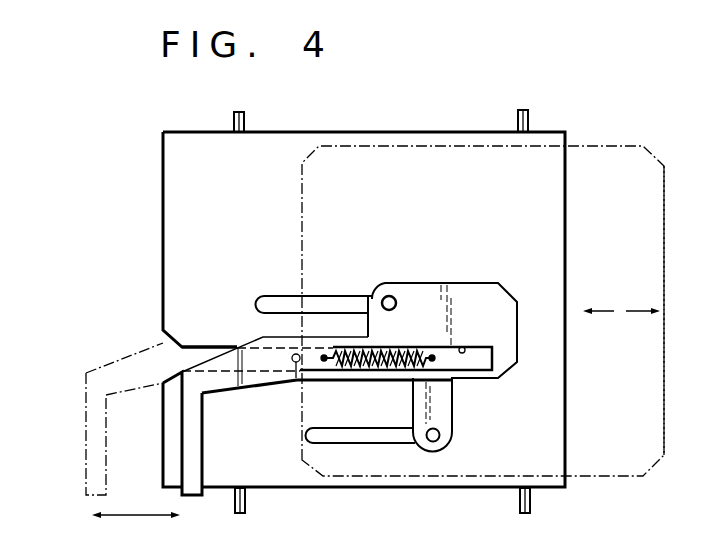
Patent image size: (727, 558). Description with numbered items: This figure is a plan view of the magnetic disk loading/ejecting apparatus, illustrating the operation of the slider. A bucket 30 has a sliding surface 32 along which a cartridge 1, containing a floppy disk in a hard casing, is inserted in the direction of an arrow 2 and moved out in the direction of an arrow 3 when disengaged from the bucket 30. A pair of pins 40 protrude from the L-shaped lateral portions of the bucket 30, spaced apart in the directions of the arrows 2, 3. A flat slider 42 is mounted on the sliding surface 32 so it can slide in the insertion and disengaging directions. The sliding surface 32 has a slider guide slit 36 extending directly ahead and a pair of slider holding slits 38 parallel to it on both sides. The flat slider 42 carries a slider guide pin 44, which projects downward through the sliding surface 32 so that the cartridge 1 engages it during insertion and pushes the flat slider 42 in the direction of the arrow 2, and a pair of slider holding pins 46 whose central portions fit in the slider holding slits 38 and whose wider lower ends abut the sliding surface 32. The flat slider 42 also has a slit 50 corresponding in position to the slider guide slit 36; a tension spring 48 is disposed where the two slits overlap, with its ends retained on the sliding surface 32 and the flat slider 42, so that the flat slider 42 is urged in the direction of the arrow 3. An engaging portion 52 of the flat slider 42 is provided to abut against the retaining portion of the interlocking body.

The cartridge 1 is at (664, 222).
The arrow 2 is at (600, 313).
The arrow 3 is at (636, 313).
The bucket 30 is at (446, 132).
The sliding surface 32 is at (176, 242).
The slider guide slit 36 is at (192, 347).
The slider holding slits 38 is at (324, 295).
The pins 40 is at (244, 116).
The flat slider 42 is at (479, 290).
The slider guide pin 44 is at (297, 378).
The slider holding pins 46 is at (383, 295).
The tension spring 48 is at (408, 347).
The slit 50 is at (467, 348).
The engaging portion 52 is at (86, 394).